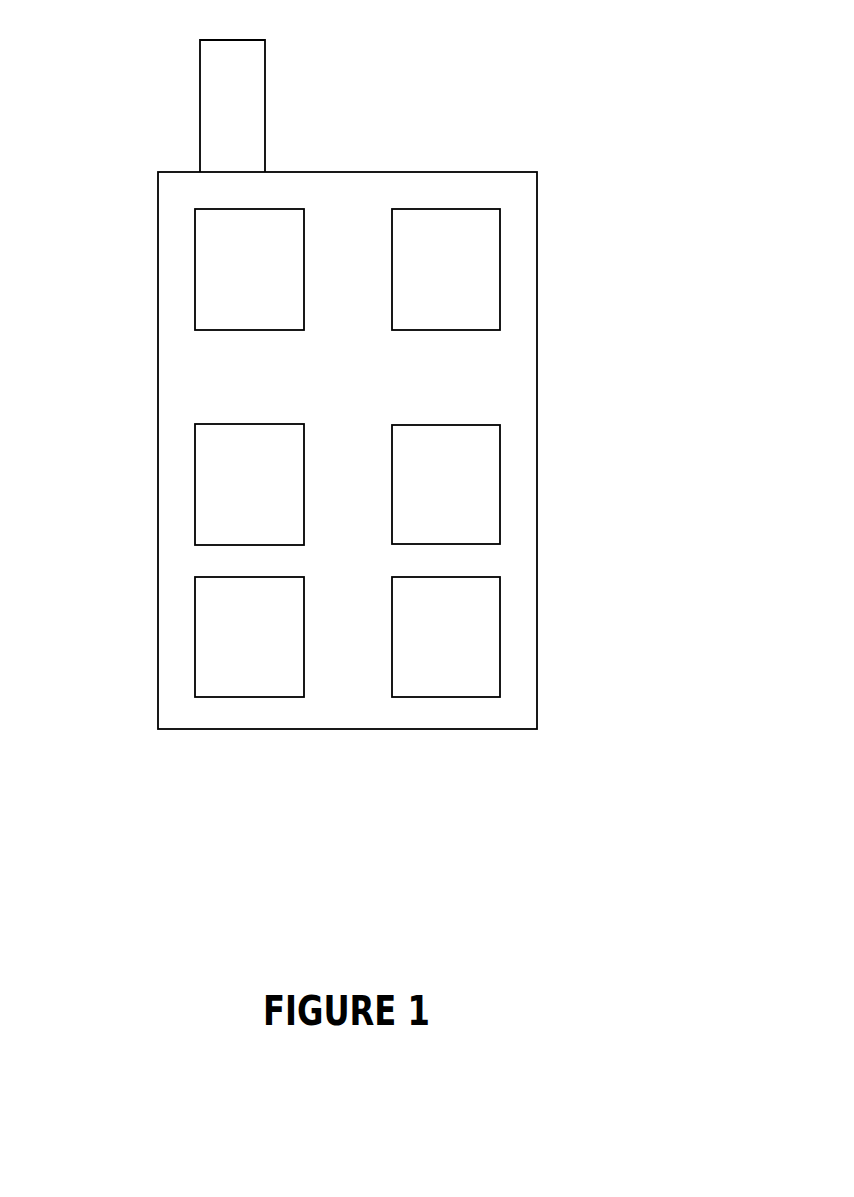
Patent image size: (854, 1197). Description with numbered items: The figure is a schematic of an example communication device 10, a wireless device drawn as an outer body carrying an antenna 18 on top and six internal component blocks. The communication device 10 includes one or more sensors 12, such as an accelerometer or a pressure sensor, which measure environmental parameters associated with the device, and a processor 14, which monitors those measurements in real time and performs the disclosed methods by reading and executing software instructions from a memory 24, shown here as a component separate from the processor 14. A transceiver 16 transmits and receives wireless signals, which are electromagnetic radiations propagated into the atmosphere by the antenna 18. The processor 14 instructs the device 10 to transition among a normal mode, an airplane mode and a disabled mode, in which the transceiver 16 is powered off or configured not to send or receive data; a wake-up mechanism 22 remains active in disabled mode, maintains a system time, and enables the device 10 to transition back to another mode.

The communication device 10 is at (537, 280).
The sensors 12 is at (232, 640).
The processor 14 is at (468, 640).
The transceiver 16 is at (242, 253).
The antenna 18 is at (242, 87).
The wake-up mechanism 22 is at (453, 227).
The memory 24 is at (468, 485).